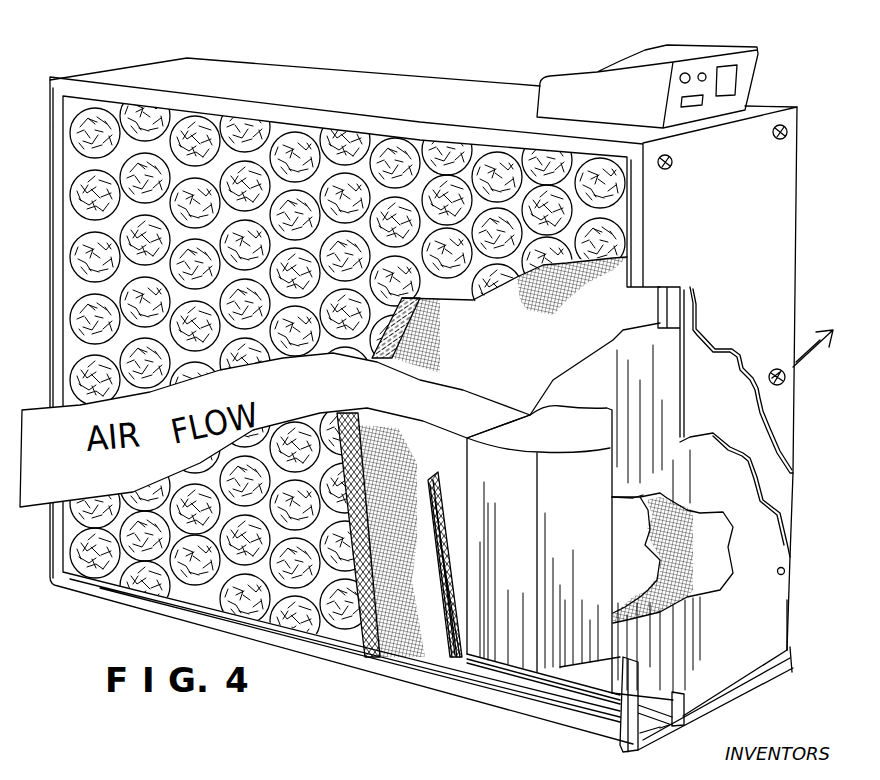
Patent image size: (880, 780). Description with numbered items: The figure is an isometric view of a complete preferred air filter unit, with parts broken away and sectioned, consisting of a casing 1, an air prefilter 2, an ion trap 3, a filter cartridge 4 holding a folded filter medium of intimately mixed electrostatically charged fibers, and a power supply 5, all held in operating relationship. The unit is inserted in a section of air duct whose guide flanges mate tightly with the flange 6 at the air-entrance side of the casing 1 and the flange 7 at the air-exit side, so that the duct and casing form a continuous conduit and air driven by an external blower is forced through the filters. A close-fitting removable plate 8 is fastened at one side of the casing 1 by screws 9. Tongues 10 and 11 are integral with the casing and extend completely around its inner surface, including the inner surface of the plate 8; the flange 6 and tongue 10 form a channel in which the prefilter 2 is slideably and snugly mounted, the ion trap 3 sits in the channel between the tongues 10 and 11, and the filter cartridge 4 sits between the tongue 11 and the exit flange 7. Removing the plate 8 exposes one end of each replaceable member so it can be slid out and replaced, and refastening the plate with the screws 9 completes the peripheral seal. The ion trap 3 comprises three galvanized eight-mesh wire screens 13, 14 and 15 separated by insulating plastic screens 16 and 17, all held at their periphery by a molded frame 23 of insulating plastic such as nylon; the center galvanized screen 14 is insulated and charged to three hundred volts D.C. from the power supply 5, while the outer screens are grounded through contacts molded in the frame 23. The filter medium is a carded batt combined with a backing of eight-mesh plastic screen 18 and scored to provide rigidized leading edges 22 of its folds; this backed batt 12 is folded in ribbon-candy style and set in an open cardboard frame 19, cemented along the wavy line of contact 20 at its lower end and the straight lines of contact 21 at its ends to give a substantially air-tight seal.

The casing 1 is at (379, 81).
The air prefilter 2 is at (73, 227).
The ion trap 3 is at (400, 644).
The filter cartridge 4 is at (727, 363).
The power supply 5 is at (705, 48).
The flange 6 is at (78, 584).
The flange 7 is at (790, 661).
The removable plate 8 is at (787, 180).
The screws 9 is at (772, 133).
The tongue 10 is at (653, 731).
The tongue 11 is at (671, 730).
The backed batt 12 is at (778, 620).
The galvanized wire screen 13 is at (434, 503).
The center galvanized screen 14 is at (448, 530).
The galvanized wire screen 15 is at (437, 483).
The electrically insulating plastic screen 16 is at (450, 545).
The electrically insulating plastic screen 17 is at (440, 496).
The plastic screen backing 18 is at (693, 547).
The open frame 19 is at (693, 710).
The wavy line of contact 20 is at (517, 667).
The straight line of contact 21 is at (785, 568).
The rigidized leading edges 22 is at (613, 622).
The molded frame 23 is at (670, 290).